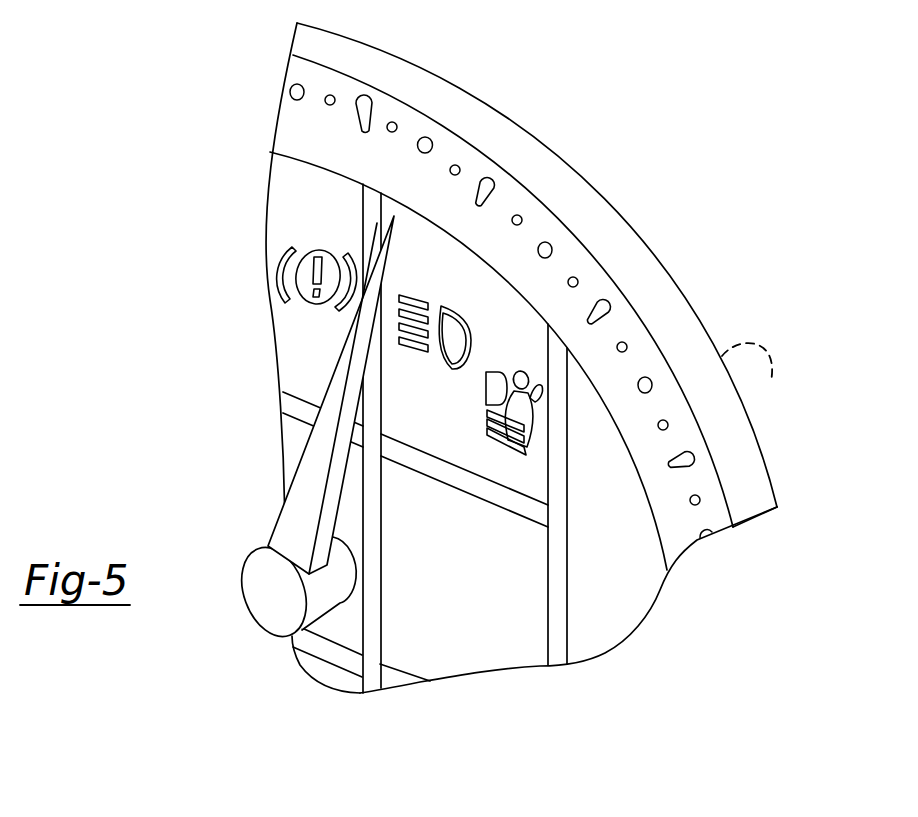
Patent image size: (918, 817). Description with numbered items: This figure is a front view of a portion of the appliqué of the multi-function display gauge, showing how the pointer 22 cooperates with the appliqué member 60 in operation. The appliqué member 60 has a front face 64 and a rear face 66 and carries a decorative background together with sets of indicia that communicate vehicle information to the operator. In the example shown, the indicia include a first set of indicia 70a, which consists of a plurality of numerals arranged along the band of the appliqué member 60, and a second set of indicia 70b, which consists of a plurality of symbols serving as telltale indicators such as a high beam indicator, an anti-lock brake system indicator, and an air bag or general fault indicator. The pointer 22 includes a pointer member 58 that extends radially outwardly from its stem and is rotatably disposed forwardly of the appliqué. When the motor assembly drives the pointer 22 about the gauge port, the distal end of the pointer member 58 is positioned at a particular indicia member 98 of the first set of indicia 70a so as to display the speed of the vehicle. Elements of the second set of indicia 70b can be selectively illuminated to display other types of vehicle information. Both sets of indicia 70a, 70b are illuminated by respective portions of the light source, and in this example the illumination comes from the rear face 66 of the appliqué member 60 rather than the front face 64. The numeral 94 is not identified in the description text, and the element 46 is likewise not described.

The pointer 22 is at (270, 499).
The pointer needle 46 is at (383, 255).
The pointer member 58 is at (312, 462).
The appliqué member 60 is at (665, 163).
The front face 64 is at (476, 627).
The rear face 66 is at (757, 380).
The first set of indicia 70a is at (372, 95).
The second set of indicia 70b is at (313, 237).
The indicia member 98 is at (347, 143).
The reference numeral 94 is at (14, 12).